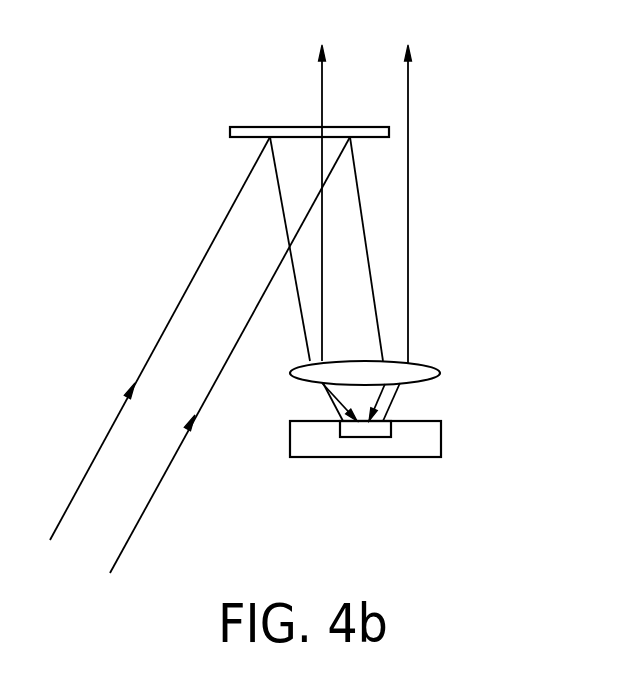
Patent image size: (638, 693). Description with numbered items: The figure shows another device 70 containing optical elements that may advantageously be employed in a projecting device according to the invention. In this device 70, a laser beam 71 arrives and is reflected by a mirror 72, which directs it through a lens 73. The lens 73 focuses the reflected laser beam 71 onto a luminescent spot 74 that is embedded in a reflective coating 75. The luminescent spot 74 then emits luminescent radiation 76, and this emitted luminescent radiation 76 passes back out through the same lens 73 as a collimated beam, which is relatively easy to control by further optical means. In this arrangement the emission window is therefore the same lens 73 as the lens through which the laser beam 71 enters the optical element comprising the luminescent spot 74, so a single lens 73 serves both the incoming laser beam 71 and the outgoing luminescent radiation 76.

The device 70 is at (140, 65).
The laser beam 71 is at (97, 450).
The mirror 72 is at (230, 133).
The lens 73 is at (440, 373).
The luminescent spot 74 is at (383, 458).
The reflective coating 75 is at (320, 458).
The luminescent radiation 76 is at (409, 178).